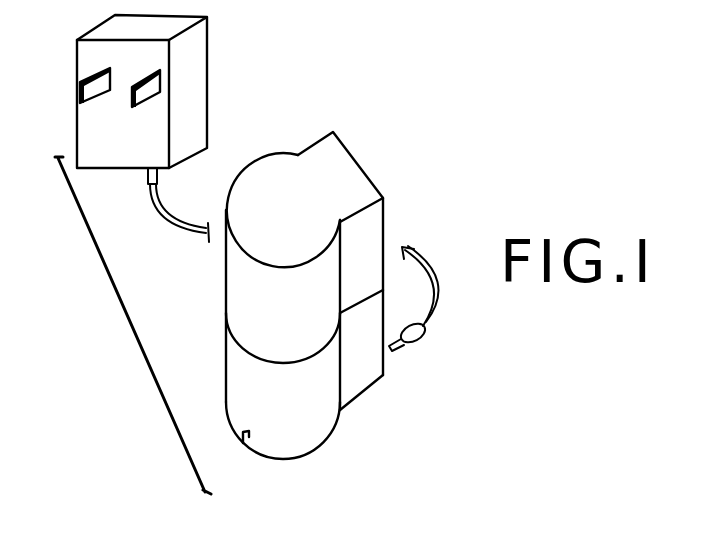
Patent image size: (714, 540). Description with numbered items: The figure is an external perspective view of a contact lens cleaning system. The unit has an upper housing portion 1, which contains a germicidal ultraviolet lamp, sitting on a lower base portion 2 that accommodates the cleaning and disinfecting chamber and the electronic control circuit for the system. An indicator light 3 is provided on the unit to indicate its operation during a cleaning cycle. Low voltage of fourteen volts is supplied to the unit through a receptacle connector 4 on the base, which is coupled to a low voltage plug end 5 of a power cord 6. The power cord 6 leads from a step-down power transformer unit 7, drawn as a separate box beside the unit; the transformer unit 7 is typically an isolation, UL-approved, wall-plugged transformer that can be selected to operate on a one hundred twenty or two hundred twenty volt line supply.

The upper housing portion 1 is at (367, 149).
The cylindrical container body 2 is at (314, 432).
The indicator light 3 is at (243, 443).
The receptacle connector 4 is at (384, 376).
The low voltage plug end 5 is at (413, 338).
The power cord 6 is at (168, 226).
The step-down power transformer unit 7 is at (213, 31).